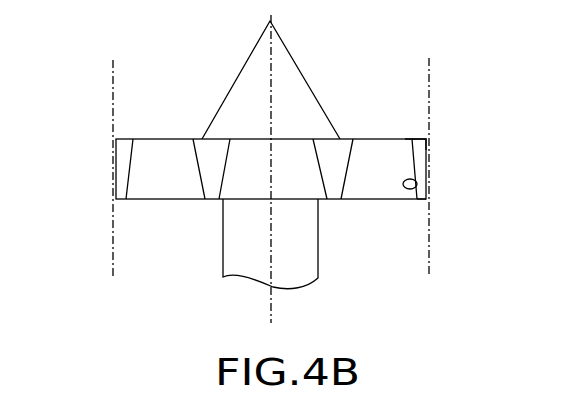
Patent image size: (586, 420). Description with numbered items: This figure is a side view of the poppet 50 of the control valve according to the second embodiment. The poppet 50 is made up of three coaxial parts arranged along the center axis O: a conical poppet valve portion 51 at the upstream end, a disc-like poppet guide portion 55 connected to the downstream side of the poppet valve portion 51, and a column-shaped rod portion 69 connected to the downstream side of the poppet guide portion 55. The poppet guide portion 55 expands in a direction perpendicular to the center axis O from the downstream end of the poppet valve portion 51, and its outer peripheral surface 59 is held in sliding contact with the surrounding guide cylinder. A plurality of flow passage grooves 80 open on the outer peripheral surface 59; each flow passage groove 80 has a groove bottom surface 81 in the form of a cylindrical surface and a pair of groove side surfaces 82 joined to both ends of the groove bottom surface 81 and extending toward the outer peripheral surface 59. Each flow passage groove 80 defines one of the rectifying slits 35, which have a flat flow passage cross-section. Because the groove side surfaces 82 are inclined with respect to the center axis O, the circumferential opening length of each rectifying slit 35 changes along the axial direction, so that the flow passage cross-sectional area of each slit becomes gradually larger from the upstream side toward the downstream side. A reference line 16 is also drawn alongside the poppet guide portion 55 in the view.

The poppet 50 is at (288, 155).
The poppet valve portion 51 is at (305, 118).
The outer peripheral surface 59 is at (428, 145).
The poppet guide portion 55 is at (430, 158).
The groove side surfaces 82 is at (417, 191).
The groove bottom surface 81 is at (387, 193).
The flow passage groove 80 is at (473, 186).
The rod portion 69 is at (313, 237).
The rectifying slits 35 is at (235, 179).
The reference axis 16 is at (428, 89).
The center axis O is at (268, 300).